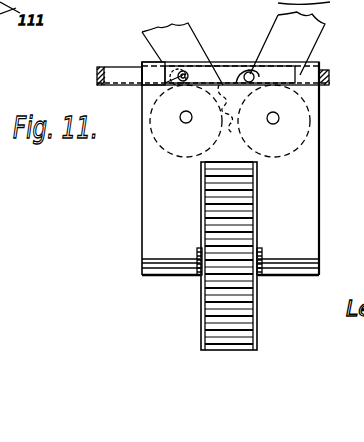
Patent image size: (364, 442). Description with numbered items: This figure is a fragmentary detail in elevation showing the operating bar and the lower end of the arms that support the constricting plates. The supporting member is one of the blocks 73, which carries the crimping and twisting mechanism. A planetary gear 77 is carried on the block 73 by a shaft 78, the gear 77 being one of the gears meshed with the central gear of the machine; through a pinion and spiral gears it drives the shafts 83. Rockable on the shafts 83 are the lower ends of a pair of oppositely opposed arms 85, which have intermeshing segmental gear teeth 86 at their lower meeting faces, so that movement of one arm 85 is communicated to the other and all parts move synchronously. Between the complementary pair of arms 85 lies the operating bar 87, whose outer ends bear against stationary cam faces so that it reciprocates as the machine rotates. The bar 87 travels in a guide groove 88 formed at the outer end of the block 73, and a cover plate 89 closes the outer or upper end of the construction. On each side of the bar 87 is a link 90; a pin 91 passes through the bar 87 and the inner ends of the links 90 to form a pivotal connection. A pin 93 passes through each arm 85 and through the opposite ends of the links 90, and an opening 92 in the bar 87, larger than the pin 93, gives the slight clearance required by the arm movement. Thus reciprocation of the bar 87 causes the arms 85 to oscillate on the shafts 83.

The block 73 is at (142, 215).
The planetary gear 77 is at (215, 312).
The shaft 78 is at (198, 257).
The shaft 83 is at (279, 118).
The arm 85 is at (287, 37).
The segmental gear teeth 86 is at (216, 113).
The operating bar 87 is at (105, 72).
The guide groove 88 is at (145, 75).
The cover plate 89 is at (232, 66).
The link 90 is at (203, 75).
The pin 91 is at (254, 73).
The opening 92 is at (165, 86).
The pin 93 is at (178, 84).